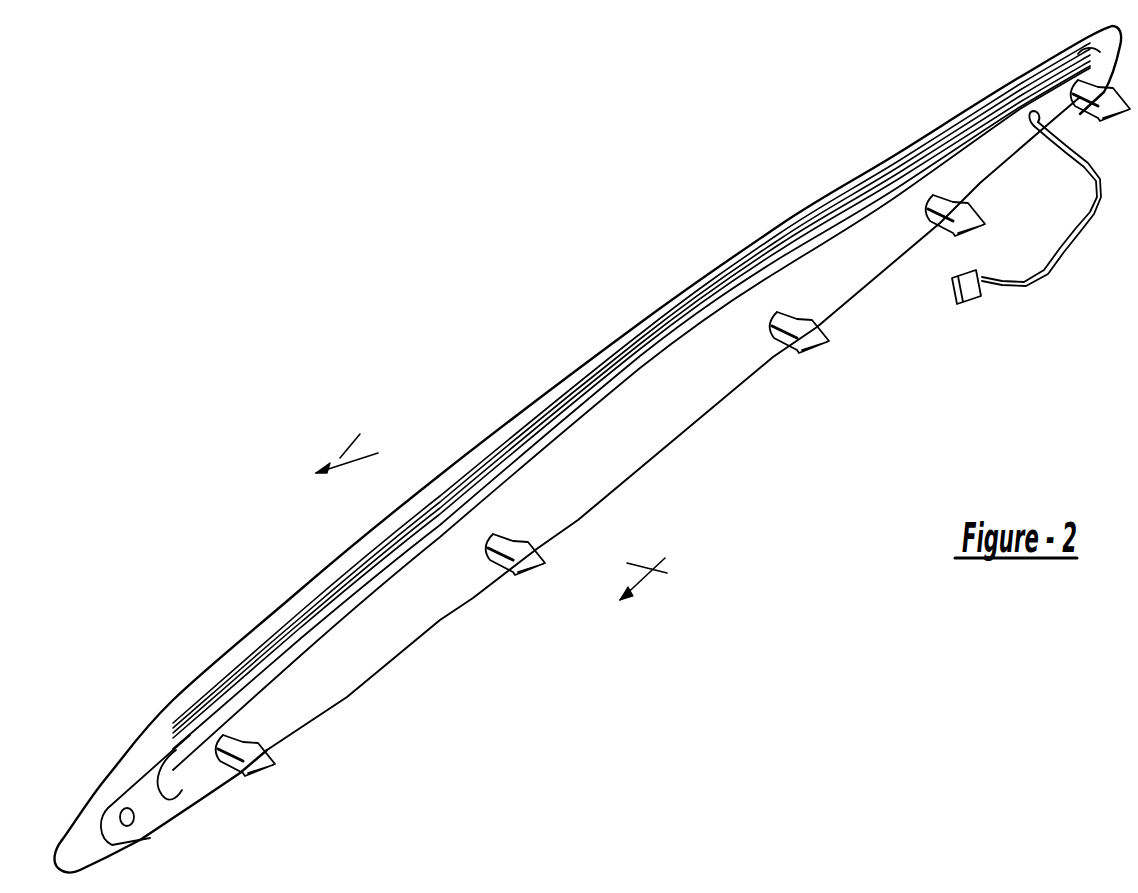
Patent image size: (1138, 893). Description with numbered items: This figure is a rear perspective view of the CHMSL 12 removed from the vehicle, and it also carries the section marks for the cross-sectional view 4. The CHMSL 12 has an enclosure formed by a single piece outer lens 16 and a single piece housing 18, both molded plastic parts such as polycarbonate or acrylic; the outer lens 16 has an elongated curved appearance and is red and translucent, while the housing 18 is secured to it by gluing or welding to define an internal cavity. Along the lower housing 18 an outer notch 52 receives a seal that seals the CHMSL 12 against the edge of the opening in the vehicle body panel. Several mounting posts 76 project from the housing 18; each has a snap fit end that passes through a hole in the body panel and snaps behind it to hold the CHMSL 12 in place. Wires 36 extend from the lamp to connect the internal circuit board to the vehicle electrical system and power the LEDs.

The CHMSL 12 is at (683, 164).
The outer lens 16 is at (507, 433).
The housing 18 is at (420, 597).
The mounting posts 76 is at (267, 763).
The outer notch 52 is at (148, 817).
The wires 36 is at (1084, 228).
The section line 4- 4 is at (477, 539).